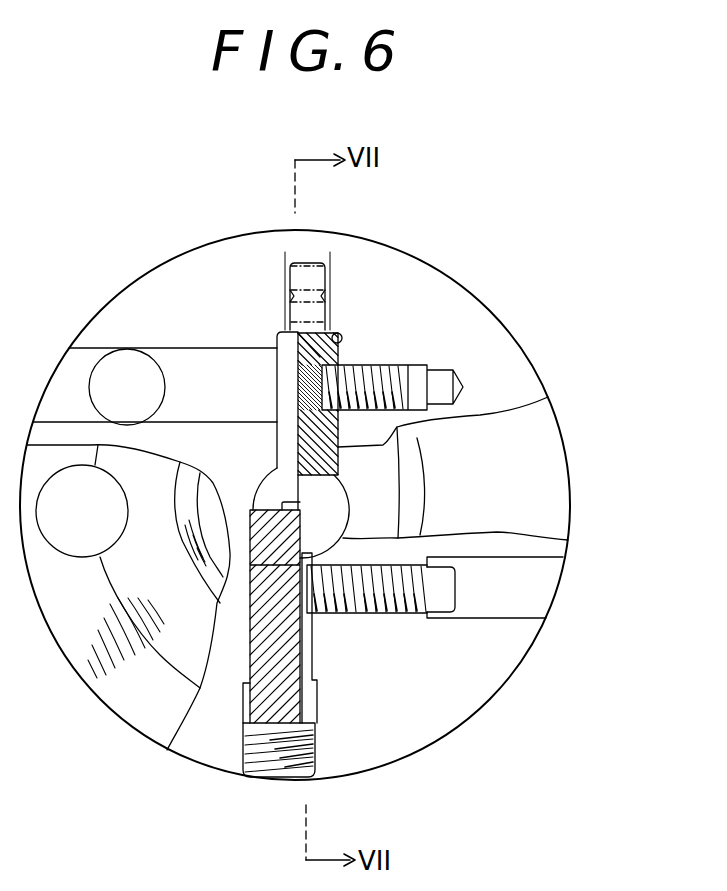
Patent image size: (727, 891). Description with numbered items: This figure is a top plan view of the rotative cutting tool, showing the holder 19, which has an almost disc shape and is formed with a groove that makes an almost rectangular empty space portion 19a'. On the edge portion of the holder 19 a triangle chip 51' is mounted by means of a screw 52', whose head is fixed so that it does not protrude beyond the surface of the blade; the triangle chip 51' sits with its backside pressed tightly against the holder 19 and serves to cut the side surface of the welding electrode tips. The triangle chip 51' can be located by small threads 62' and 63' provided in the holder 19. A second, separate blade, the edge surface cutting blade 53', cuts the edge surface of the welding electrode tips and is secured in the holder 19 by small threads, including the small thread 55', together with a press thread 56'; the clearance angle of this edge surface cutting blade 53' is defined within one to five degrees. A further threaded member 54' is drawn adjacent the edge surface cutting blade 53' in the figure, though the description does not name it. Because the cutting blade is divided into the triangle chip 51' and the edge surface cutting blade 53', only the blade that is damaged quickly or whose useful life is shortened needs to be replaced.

The holder 19 is at (514, 330).
The empty space portion 19a' is at (156, 333).
The triangle chip 51' is at (396, 353).
The screw 52' is at (264, 344).
The edge surface cutting blade 53' is at (258, 662).
The adjusting screw 54' is at (381, 622).
The small thread 55' is at (521, 584).
The press thread 56' is at (311, 773).
The small thread 62' is at (366, 262).
The small thread 63' is at (342, 250).